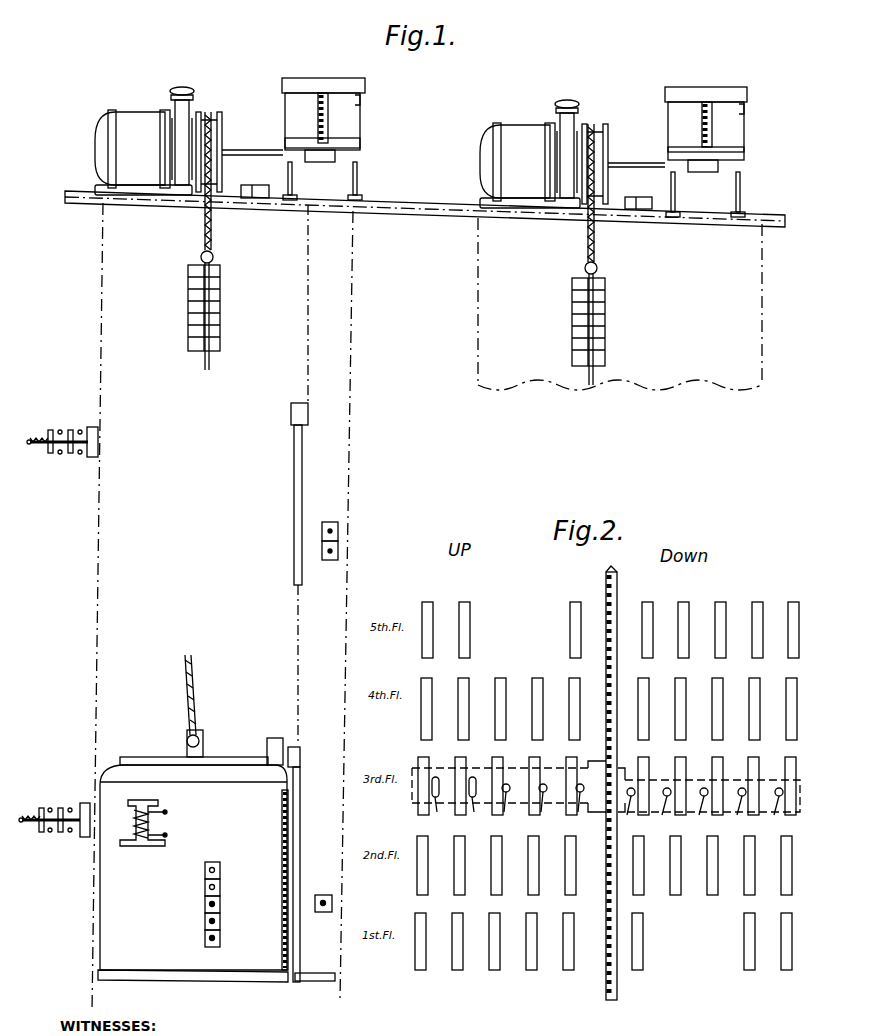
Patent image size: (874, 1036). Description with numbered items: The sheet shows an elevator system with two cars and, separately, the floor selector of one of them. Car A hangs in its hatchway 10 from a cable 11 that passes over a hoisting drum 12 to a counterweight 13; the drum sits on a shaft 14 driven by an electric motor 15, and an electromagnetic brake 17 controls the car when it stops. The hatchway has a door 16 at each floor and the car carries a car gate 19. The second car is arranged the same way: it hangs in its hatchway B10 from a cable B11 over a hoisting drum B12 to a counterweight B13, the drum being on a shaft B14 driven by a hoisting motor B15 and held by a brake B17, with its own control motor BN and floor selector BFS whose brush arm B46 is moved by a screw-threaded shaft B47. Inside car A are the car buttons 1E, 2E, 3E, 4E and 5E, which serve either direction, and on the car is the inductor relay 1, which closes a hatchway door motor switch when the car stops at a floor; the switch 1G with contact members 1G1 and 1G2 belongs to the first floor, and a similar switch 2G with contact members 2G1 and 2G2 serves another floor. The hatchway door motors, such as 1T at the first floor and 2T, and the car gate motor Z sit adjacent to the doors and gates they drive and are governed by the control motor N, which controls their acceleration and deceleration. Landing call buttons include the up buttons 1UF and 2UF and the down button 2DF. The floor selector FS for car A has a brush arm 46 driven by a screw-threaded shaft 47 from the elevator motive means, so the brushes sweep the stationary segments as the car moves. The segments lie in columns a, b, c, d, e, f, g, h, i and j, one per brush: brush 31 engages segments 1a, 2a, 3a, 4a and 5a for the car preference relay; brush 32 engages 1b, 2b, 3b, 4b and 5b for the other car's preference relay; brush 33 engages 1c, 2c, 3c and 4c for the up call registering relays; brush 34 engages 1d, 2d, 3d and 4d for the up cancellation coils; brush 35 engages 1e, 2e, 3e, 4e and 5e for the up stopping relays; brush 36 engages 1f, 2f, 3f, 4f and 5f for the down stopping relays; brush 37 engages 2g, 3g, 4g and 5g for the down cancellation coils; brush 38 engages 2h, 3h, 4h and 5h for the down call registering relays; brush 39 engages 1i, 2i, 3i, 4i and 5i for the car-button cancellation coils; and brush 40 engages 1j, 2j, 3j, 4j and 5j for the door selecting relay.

In FIG. 1, the hatchway 10 is at (96, 556).
In FIG. 1, the cable 11 is at (211, 243).
In FIG. 1, the hoisting drum 12 is at (221, 118).
In FIG. 1, the counterweight 13 is at (220, 302).
In FIG. 1, the shaft 14 is at (244, 150).
In FIG. 1, the electric motor 15 is at (130, 120).
In FIG. 1, the brake 17 is at (192, 90).
In FIG. 1, the door 16 is at (302, 465).
In FIG. 1, the car gate 19 is at (280, 807).
In FIG. 1, the brush arm 46 is at (360, 148).
In FIG. 2, the brush arm 46 is at (412, 798).
In FIG. 1, the screw-threaded shaft 47 is at (328, 118).
In FIG. 2, the screw-threaded shaft 47 is at (606, 996).
In FIG. 1, the control motor N is at (248, 185).
In FIG. 1, the floor selector FS is at (323, 126).
In FIG. 2, the floor selector FS is at (558, 570).
In FIG. 1, the car A is at (193, 856).
In FIG. 1, the car gate motor Z is at (274, 742).
In FIG. 1, the inductor relay 1 is at (158, 803).
In FIG. 1, the hatchway door motor 1T is at (300, 751).
In FIG. 1, the hatchway door motor 2T is at (308, 413).
In FIG. 1, the up call push button 1UF is at (323, 895).
In FIG. 1, the up call push button 2UF is at (329, 522).
In FIG. 1, the down call push button 2DF is at (329, 560).
In FIG. 1, the hatchway door motor switch 1G is at (54, 808).
In FIG. 1, the contact member 1G1 is at (48, 833).
In FIG. 1, the contact member 1G2 is at (68, 834).
In FIG. 1, the hatchway door motor switch 2G is at (62, 429).
In FIG. 1, the contact member 2G1 is at (58, 455).
In FIG. 1, the contact member 2G2 is at (78, 456).
In FIG. 1, the car button 1E is at (222, 936).
In FIG. 1, the car button 2E is at (222, 919).
In FIG. 1, the car button 3E is at (222, 902).
In FIG. 1, the car button 4E is at (222, 885).
In FIG. 1, the car button 5E is at (222, 868).
In FIG. 1, the hatchway B10 is at (620, 304).
In FIG. 1, the cable B11 is at (596, 252).
In FIG. 1, the hoisting drum B12 is at (598, 128).
In FIG. 1, the counterweight B13 is at (606, 320).
In FIG. 1, the shaft B14 is at (627, 163).
In FIG. 1, the hoisting motor B15 is at (517, 138).
In FIG. 1, the brake B17 is at (575, 95).
In FIG. 1, the brush arm B46 is at (744, 158).
In FIG. 1, the screw-threaded shaft B47 is at (712, 130).
In FIG. 1, the control motor BN is at (632, 192).
In FIG. 1, the floor selector BFS is at (706, 138).
In FIG. 2, the contact brush 31 is at (439, 804).
In FIG. 2, the contact brush 32 is at (475, 804).
In FIG. 2, the contact brush 33 is at (511, 808).
In FIG. 2, the contact brush 34 is at (548, 808).
In FIG. 2, the contact brush 35 is at (583, 808).
In FIG. 2, the contact brush 36 is at (625, 813).
In FIG. 2, the contact brush 37 is at (661, 813).
In FIG. 2, the contact brush 38 is at (698, 813).
In FIG. 2, the contact brush 39 is at (735, 813).
In FIG. 2, the contact brush 40 is at (771, 813).
In FIG. 2, the contact segment 5a is at (433, 638).
In FIG. 2, the contact segment 5b is at (470, 638).
In FIG. 2, the contact segment 5e is at (581, 638).
In FIG. 2, the contact segment 5f is at (653, 638).
In FIG. 2, the contact segment 5g is at (689, 638).
In FIG. 2, the contact segment 5h is at (726, 638).
In FIG. 2, the contact segment 5i is at (763, 638).
In FIG. 2, the contact segment 5j is at (788, 645).
In FIG. 2, the contact segment 4a is at (432, 714).
In FIG. 2, the contact segment 4b is at (469, 714).
In FIG. 2, the contact segment 4c is at (506, 714).
In FIG. 2, the contact segment 4d is at (543, 714).
In FIG. 2, the contact segment 4e is at (580, 714).
In FIG. 2, the contact segment 4f is at (649, 714).
In FIG. 2, the contact segment 4g is at (686, 714).
In FIG. 2, the contact segment 4h is at (723, 714).
In FIG. 2, the contact segment 4i is at (760, 714).
In FIG. 2, the contact segment 4j is at (786, 721).
In FIG. 2, the contact segment 3a is at (429, 772).
In FIG. 2, the contact segment 3b is at (466, 772).
In FIG. 2, the contact segment 3c is at (503, 772).
In FIG. 2, the contact segment 3d is at (540, 772).
In FIG. 2, the contact segment 3e is at (577, 770).
In FIG. 2, the contact segment 3f is at (649, 772).
In FIG. 2, the contact segment 3g is at (686, 772).
In FIG. 2, the contact segment 3h is at (723, 772).
In FIG. 2, the contact segment 3i is at (759, 772).
In FIG. 2, the contact segment 3j is at (788, 771).
In FIG. 2, the contact segment 2a is at (428, 872).
In FIG. 2, the contact segment 2b is at (465, 872).
In FIG. 2, the contact segment 2c is at (502, 872).
In FIG. 2, the contact segment 2d is at (539, 872).
In FIG. 2, the contact segment 2e is at (576, 872).
In FIG. 2, the contact segment 2f is at (644, 872).
In FIG. 2, the contact segment 2g is at (681, 872).
In FIG. 2, the contact segment 2h is at (718, 872).
In FIG. 2, the contact segment 2i is at (755, 872).
In FIG. 2, the contact segment 2j is at (781, 879).
In FIG. 2, the contact segment 1a is at (426, 953).
In FIG. 2, the contact segment 1b is at (463, 953).
In FIG. 2, the contact segment 1c is at (500, 953).
In FIG. 2, the contact segment 1d is at (537, 953).
In FIG. 2, the contact segment 1e is at (574, 953).
In FIG. 2, the contact segment 1f is at (643, 953).
In FIG. 2, the contact segment 1i is at (744, 951).
In FIG. 2, the contact segment 1j is at (781, 951).
In FIG. 2, the contact segment column a is at (421, 989).
In FIG. 2, the contact segment column b is at (458, 989).
In FIG. 2, the contact segment column c is at (495, 989).
In FIG. 2, the contact segment column d is at (532, 989).
In FIG. 2, the contact segment column e is at (569, 989).
In FIG. 2, the contact segment column f is at (639, 989).
In FIG. 2, the contact segment column g is at (676, 989).
In FIG. 2, the contact segment column h is at (713, 989).
In FIG. 2, the contact segment column i is at (748, 989).
In FIG. 2, the contact segment column j is at (783, 989).